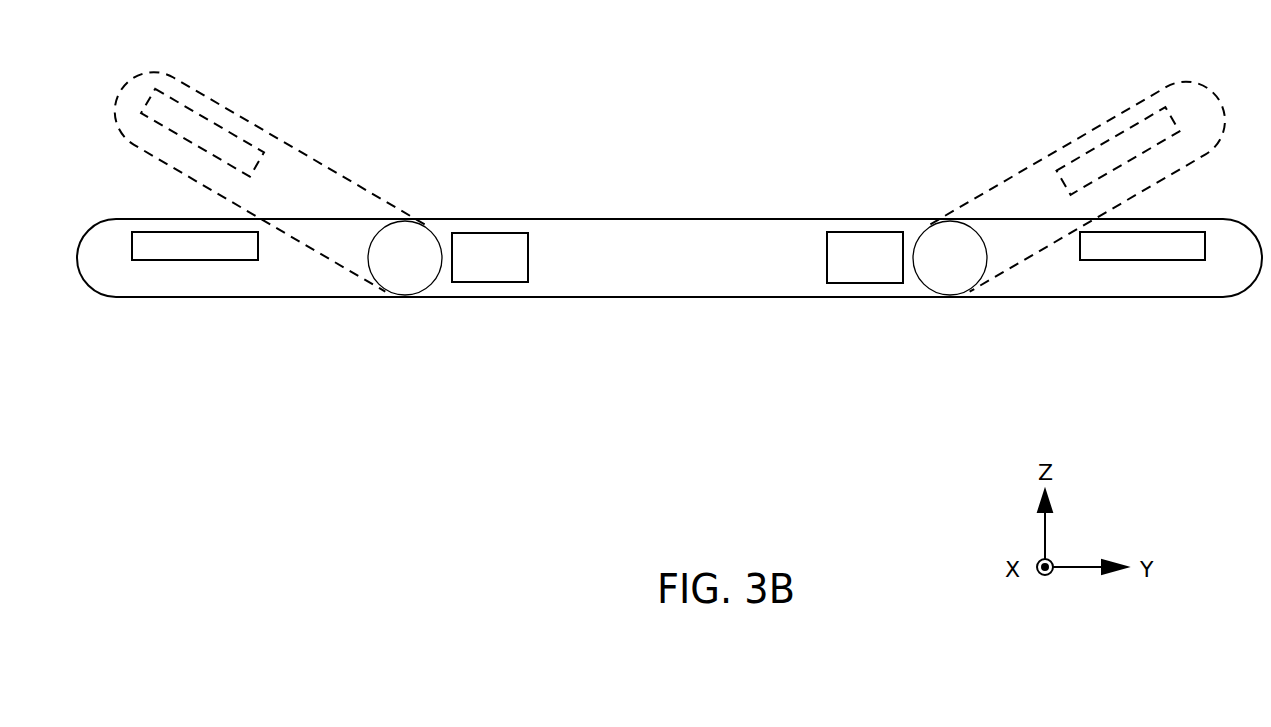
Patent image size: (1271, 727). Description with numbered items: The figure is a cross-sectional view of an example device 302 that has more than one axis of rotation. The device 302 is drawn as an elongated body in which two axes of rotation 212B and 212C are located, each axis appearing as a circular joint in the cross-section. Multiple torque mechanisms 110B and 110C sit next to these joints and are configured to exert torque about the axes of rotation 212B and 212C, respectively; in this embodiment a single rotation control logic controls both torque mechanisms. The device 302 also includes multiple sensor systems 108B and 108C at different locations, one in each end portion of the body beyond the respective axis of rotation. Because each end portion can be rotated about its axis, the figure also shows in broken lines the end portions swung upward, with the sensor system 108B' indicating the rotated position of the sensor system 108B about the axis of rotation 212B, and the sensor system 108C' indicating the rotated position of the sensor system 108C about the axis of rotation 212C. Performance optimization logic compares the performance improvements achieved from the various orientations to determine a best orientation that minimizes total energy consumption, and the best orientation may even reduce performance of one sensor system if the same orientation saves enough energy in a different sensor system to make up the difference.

The device 302 is at (705, 186).
The axis of rotation 212B is at (405, 258).
The axis of rotation 212C is at (948, 258).
The sensor system 108B is at (146, 288).
The sensor system 108B' is at (262, 172).
The sensor system 108C is at (1093, 290).
The sensor system 108C' is at (1084, 179).
The torque mechanism 110B is at (488, 257).
The torque mechanism 110C is at (865, 258).